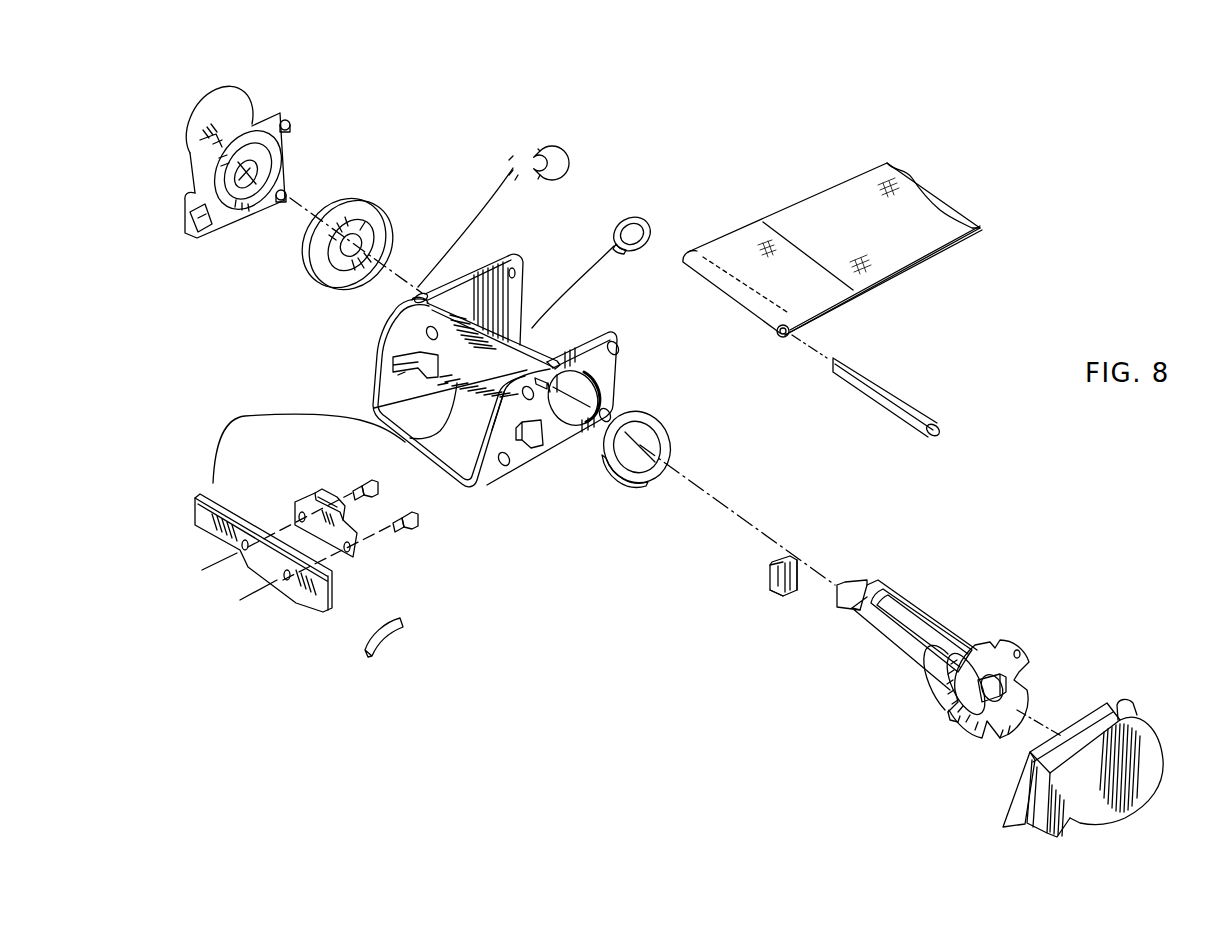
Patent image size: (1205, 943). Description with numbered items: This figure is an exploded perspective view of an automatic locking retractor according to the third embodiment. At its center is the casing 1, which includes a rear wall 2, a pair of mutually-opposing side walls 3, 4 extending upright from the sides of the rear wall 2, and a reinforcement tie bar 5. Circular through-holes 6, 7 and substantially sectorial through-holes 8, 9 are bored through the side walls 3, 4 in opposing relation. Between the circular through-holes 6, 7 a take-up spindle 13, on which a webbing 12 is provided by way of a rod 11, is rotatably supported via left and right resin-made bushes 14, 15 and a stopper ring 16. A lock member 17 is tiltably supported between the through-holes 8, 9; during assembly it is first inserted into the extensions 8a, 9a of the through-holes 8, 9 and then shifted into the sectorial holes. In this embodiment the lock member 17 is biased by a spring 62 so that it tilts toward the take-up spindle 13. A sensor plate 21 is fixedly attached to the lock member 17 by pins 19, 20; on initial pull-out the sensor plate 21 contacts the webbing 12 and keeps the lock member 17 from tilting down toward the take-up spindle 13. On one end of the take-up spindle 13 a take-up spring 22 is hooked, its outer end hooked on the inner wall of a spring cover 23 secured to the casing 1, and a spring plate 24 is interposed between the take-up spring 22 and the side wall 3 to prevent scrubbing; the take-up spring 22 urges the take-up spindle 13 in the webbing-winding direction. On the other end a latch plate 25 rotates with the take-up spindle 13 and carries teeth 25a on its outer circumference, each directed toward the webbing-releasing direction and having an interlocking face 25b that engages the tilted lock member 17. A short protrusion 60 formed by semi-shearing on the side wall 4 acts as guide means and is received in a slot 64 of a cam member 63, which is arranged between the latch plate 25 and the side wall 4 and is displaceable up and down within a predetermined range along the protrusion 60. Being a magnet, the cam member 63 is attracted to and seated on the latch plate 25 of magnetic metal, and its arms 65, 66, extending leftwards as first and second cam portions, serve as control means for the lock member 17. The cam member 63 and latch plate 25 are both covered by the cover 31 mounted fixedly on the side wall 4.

The casing 1 is at (364, 375).
The rear wall 2 is at (458, 455).
The side wall 3 is at (405, 330).
The side wall 4 is at (558, 437).
The reinforcement tie bar 5 is at (462, 315).
The circular through-hole 6 is at (506, 312).
The circular through-hole 7 is at (598, 381).
The sectorial through-hole 8 is at (420, 372).
The extension 8a is at (403, 356).
The sectorial through-hole 9 is at (535, 455).
The extension 9a is at (492, 470).
The rod 11 is at (903, 398).
The webbing 12 is at (912, 252).
The take-up spindle 13 is at (918, 610).
The bush 14 is at (640, 217).
The bush 15 is at (670, 421).
The stopper ring 16 is at (548, 153).
The lock member 17 is at (210, 497).
The pin 19 is at (358, 483).
The pin 20 is at (408, 529).
The sensor plate 21 is at (313, 500).
The take-up spring 22 is at (243, 185).
The spring cover 23 is at (287, 143).
The spring plate 24 is at (360, 205).
The latch plate 25 is at (990, 665).
The tooth 25a is at (952, 720).
The interlocking face 25b is at (1020, 652).
The cover 31 is at (1102, 703).
The short protrusion 60 is at (562, 356).
The spring 62 is at (403, 637).
The cam member 63 is at (795, 587).
The slot 64 is at (797, 562).
The arm 65 is at (768, 573).
The arm 66 is at (770, 597).